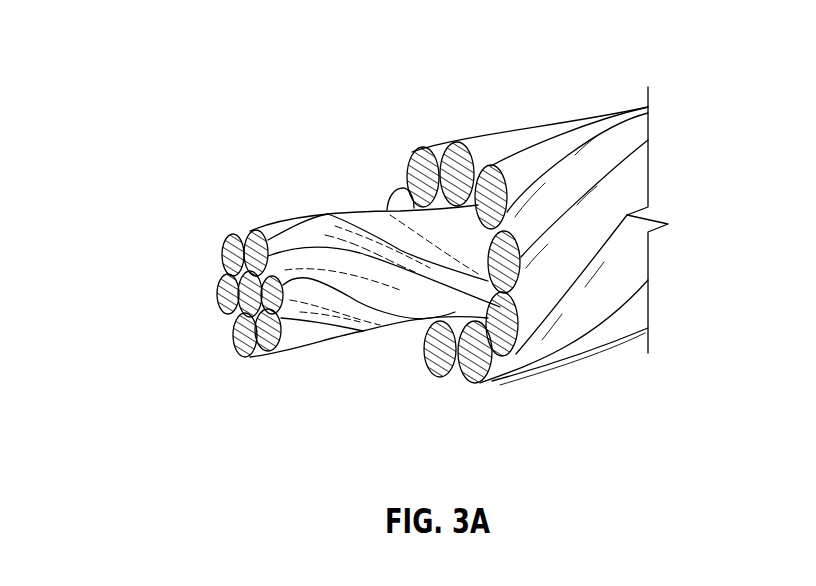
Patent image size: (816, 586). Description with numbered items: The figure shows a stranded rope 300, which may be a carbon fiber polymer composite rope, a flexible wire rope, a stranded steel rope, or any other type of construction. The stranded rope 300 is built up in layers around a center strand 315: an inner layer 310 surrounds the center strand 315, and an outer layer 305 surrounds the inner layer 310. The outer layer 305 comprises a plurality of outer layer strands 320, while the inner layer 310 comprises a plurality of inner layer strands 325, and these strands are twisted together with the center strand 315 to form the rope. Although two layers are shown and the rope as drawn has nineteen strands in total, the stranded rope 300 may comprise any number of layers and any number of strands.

The stranded rope 300 is at (380, 228).
The outer layer 305 is at (461, 114).
The inner layer 310 is at (321, 234).
The center strand 315 is at (248, 300).
The outer layer strands 320 is at (562, 335).
The inner layer strands 325 is at (227, 245).